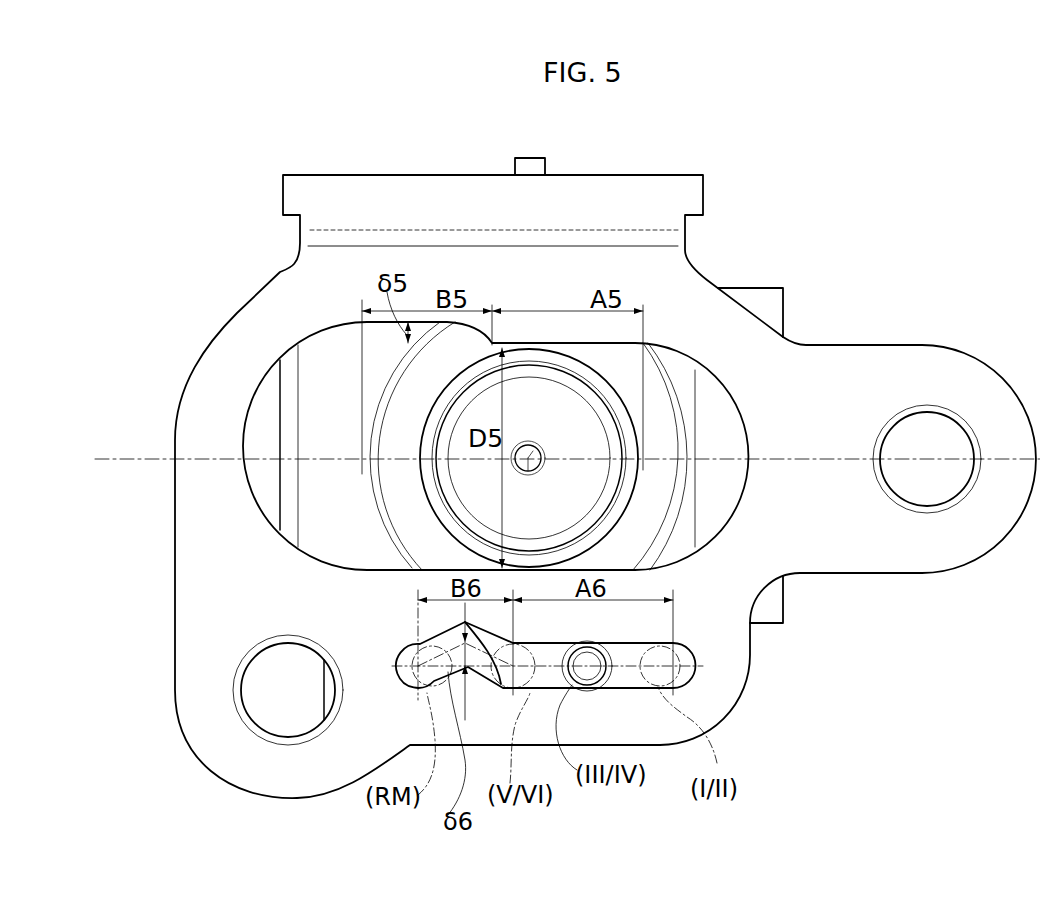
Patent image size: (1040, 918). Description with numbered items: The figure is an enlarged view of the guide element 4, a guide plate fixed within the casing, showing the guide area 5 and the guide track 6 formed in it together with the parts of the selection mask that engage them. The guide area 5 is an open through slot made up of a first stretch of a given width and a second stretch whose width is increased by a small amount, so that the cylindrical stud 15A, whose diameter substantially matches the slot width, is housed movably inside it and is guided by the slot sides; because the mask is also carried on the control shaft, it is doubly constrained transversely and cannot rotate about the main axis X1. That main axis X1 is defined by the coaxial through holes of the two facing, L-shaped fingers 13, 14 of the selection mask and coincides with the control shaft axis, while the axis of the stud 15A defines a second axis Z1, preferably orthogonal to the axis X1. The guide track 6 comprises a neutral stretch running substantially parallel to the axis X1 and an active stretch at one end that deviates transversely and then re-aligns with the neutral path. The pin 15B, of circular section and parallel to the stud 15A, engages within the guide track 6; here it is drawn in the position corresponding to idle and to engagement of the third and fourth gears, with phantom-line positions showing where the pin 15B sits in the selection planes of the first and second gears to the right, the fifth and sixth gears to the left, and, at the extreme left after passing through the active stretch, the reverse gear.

The guide element 4 is at (903, 575).
The guide area 5 is at (718, 524).
The guide track 6 is at (695, 670).
The finger 13 is at (318, 519).
The finger 14 is at (778, 312).
The cylindrical stud 15A is at (560, 498).
The pin 15B is at (598, 687).
The main axis X1 is at (793, 459).
The second axis Z1 is at (550, 448).